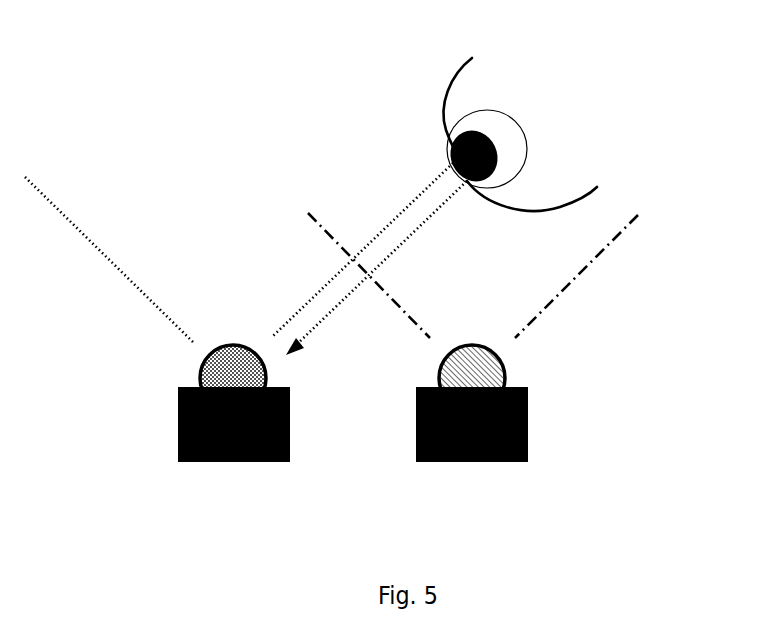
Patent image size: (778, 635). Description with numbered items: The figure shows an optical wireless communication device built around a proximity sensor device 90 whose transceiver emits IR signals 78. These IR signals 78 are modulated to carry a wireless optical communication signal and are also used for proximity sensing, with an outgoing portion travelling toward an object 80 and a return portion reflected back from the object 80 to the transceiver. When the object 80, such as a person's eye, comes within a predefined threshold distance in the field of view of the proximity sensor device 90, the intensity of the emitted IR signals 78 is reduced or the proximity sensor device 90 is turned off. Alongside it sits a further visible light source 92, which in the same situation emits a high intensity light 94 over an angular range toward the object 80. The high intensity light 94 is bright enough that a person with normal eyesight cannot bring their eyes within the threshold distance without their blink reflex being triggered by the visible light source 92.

The IR signals 78 is at (53, 203).
The object 80 is at (567, 123).
The proximity sensor device 90 is at (178, 414).
The visible light source 92 is at (528, 423).
The high intensity light 94 is at (553, 296).